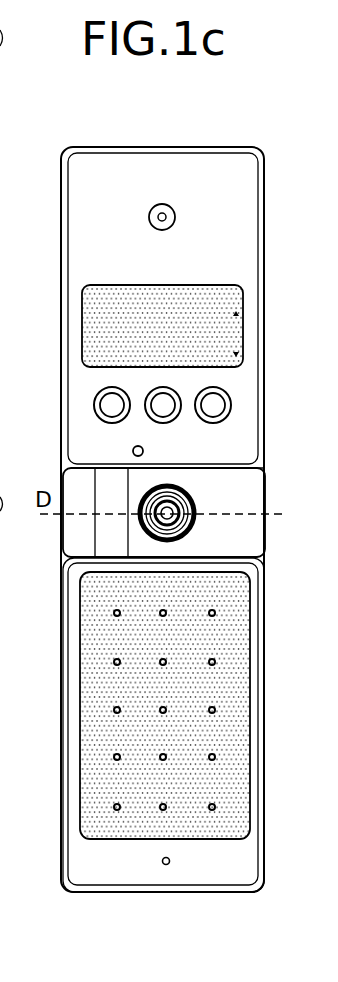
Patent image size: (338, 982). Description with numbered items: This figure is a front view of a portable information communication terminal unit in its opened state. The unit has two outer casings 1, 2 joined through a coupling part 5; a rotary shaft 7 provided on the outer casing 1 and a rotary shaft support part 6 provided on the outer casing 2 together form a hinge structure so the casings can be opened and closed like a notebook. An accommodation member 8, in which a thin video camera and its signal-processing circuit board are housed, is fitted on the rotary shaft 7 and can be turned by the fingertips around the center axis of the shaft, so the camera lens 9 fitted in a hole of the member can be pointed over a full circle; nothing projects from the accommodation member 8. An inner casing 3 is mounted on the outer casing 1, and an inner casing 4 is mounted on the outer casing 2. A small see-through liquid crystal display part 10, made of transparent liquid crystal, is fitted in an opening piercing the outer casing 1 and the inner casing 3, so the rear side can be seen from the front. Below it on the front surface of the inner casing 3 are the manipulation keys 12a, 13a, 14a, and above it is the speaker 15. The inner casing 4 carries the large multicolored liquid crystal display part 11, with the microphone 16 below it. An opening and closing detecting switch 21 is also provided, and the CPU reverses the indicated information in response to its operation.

The outer casing 1 is at (262, 302).
The outer casing 2 is at (265, 692).
The inner casing 3 is at (240, 184).
The inner casing 4 is at (242, 860).
The coupling part 5 is at (268, 493).
The rotary shaft support part 6 is at (108, 542).
The rotary shaft 7 is at (62, 532).
The accommodation member 8 is at (252, 542).
The camera lens 9 is at (193, 515).
The see-through liquid crystal display part 10 is at (210, 298).
The multicolored liquid crystal display part 11 is at (203, 782).
The manipulation key 12a is at (112, 405).
The manipulation key 13a is at (163, 409).
The manipulation key 14a is at (213, 405).
The speaker 15 is at (175, 217).
The microphone 16 is at (162, 860).
The opening and closing detecting switch 21 is at (131, 450).